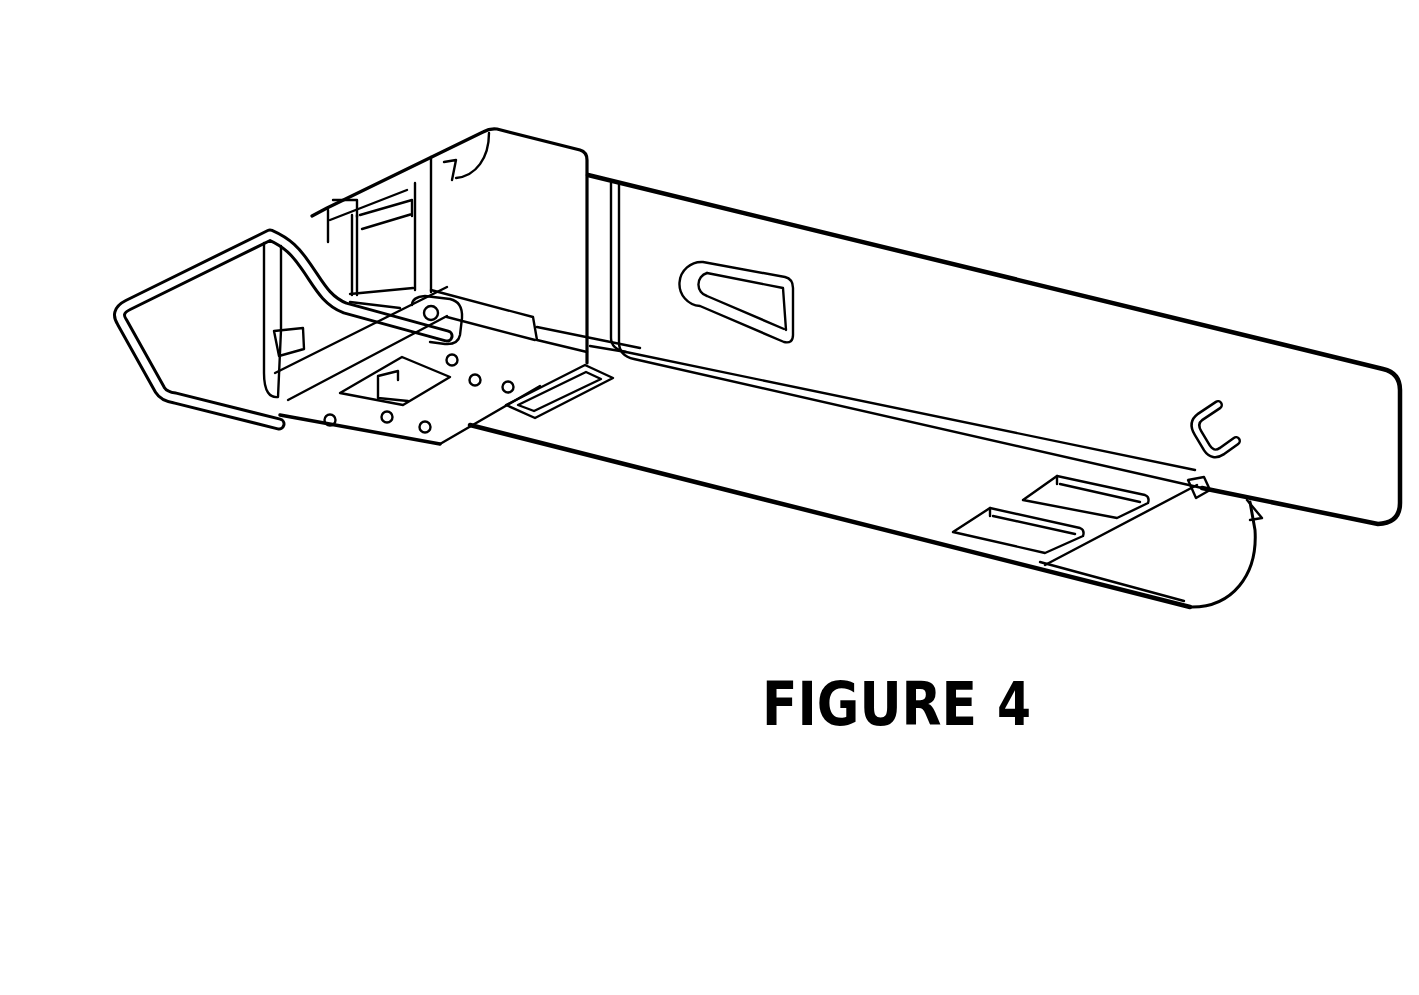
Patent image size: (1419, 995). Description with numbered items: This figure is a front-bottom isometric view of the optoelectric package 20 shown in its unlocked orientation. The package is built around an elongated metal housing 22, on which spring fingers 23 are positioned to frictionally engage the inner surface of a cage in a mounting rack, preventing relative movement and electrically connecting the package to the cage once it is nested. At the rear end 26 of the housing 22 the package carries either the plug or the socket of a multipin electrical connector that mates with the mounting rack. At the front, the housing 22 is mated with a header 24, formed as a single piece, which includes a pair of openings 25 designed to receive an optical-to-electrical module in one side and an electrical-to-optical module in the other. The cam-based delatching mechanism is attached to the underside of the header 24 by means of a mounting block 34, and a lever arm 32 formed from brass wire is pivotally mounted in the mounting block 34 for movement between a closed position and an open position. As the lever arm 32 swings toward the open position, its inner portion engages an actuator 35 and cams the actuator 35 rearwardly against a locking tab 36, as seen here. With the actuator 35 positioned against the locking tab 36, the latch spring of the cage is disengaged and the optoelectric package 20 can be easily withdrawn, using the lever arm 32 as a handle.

The optoelectric package 20 is at (1032, 234).
The elongated housing 22 is at (1068, 323).
The spring fingers 23 is at (718, 284).
The header 24 is at (533, 173).
The openings 25 is at (385, 250).
The rear end 26 is at (1270, 537).
The lever arm 32 is at (174, 283).
The mounting block 34 is at (358, 430).
The actuator 35 is at (558, 395).
The locking tab 36 is at (550, 397).